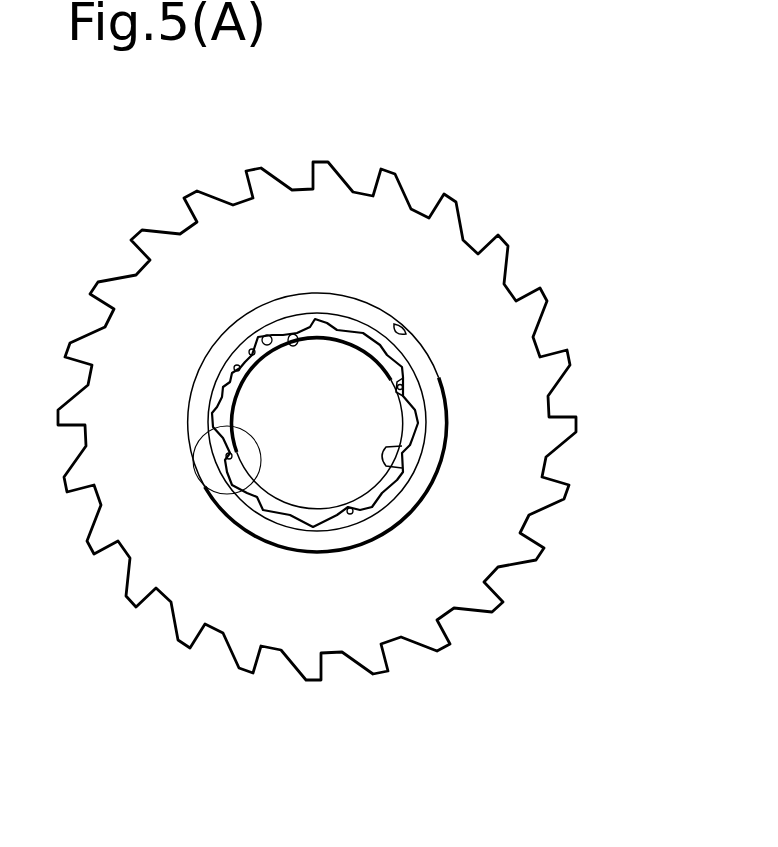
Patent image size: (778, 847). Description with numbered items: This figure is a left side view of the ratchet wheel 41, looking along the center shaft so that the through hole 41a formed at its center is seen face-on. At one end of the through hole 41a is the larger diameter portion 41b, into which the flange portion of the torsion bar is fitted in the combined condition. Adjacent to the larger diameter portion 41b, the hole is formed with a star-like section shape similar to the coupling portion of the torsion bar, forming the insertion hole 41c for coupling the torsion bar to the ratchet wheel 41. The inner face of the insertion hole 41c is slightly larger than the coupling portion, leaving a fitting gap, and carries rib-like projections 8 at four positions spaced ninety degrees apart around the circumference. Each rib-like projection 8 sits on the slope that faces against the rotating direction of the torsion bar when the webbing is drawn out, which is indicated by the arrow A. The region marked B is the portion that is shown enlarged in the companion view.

The ratchet wheel 41 is at (520, 183).
The through hole 41a is at (343, 470).
The larger diameter portion 41b is at (407, 332).
The insertion hole 41c is at (398, 452).
The rib-like projection 8 is at (258, 352).
The arrow A is at (268, 368).
The portion B is at (200, 483).